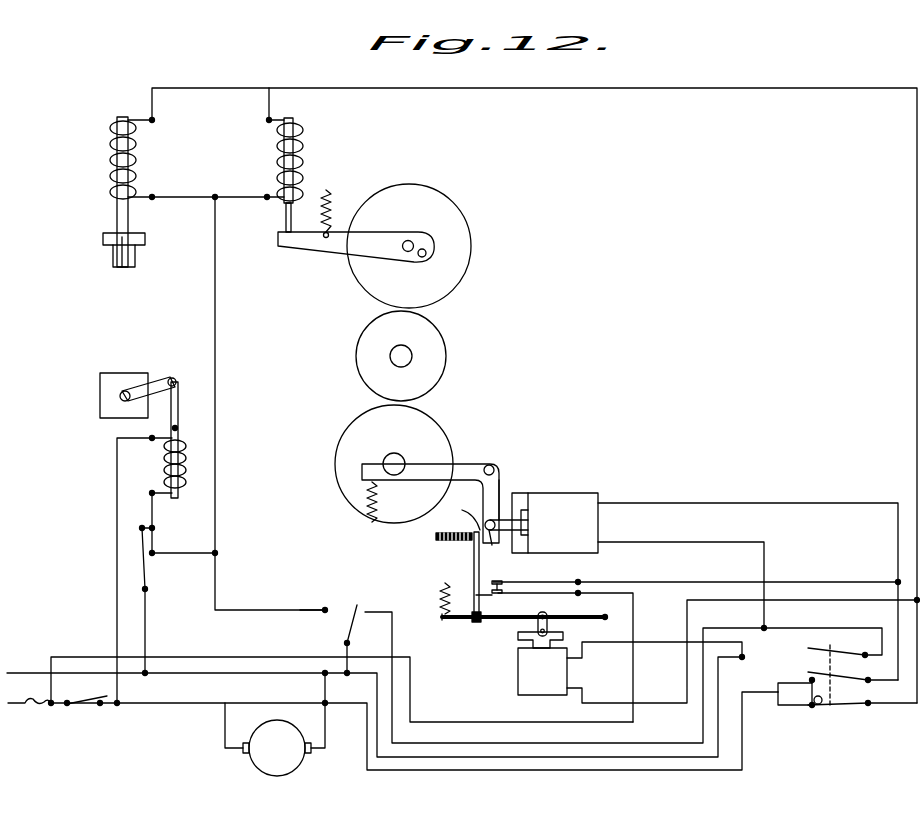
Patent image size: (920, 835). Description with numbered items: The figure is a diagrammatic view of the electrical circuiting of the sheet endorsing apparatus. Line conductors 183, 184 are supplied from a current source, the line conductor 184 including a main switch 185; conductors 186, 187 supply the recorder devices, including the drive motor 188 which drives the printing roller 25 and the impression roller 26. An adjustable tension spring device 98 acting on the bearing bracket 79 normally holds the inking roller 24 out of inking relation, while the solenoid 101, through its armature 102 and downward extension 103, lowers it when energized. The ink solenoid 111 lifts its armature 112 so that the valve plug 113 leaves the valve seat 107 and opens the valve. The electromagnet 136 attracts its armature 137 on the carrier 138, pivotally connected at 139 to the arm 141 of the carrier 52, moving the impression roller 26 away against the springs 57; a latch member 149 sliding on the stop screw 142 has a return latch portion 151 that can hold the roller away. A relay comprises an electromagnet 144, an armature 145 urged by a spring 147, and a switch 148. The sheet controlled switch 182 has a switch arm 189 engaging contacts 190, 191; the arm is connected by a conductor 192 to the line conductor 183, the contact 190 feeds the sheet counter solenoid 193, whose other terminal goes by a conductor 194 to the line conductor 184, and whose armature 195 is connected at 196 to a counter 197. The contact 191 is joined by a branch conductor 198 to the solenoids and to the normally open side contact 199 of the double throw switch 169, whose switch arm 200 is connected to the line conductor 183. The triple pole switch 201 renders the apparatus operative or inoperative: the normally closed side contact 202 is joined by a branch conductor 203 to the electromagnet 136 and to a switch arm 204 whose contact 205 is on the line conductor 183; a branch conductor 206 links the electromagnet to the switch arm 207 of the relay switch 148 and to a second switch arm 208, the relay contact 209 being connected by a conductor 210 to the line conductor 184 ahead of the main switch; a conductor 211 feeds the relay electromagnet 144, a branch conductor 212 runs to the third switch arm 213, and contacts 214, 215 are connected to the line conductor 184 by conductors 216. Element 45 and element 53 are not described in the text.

The inking roller 24 is at (471, 246).
The printing roller 25 is at (446, 340).
The impression roller 26 is at (446, 422).
The armature 45 is at (562, 637).
The carrier 52 is at (488, 470).
The pivot 53 is at (493, 467).
The springs 57 is at (370, 520).
The bearing bracket 79 is at (312, 248).
The adjustable tension spring device 98 is at (333, 210).
The solenoid 101 is at (300, 142).
The armature 102 is at (300, 170).
The downward extension 103 is at (284, 212).
The valve seat 107 is at (172, 230).
The solenoid 111 is at (130, 148).
The armature 112 is at (130, 180).
The valve plug 113 is at (118, 236).
The electromagnet 136 is at (573, 493).
The armature 137 is at (514, 504).
The carrier 138 is at (500, 527).
The pivotal connection 139 is at (491, 538).
The arm 141 is at (501, 494).
The stop screw 142 is at (446, 533).
The electromagnet 144 is at (522, 662).
The armature 145 is at (523, 619).
The spring 147 is at (440, 607).
The switch 148 is at (569, 585).
The latch member 149 is at (473, 564).
The return latch portion 151 is at (460, 511).
The sheet controlled double throw switch 169 is at (370, 638).
The sheet controlled switch 182 is at (134, 552).
The line conductor 183 is at (32, 672).
The line conductor 184 is at (21, 706).
The main switch 185 is at (88, 709).
The conductor 186 is at (342, 722).
The conductor 187 is at (225, 723).
The drive motor 188 is at (290, 765).
The switch arm 189 is at (140, 530).
The contact 190 is at (153, 530).
The contact 191 is at (153, 556).
The conductor 192 is at (146, 632).
The sheet counter solenoid 193 is at (186, 458).
The conductor 194 is at (117, 474).
The armature 195 is at (180, 432).
The connection 196 is at (190, 365).
The counter 197 is at (100, 394).
The branch conductor 198 is at (216, 318).
The normally open side contact 199 is at (325, 609).
The switch arm 200 is at (354, 606).
The triple pole switch 201 is at (790, 679).
The normally closed side contact 202 is at (446, 583).
The branch conductor 203 is at (829, 629).
The switch arm 204 is at (841, 643).
The contact 205 is at (806, 663).
The branch conductor 206 is at (898, 547).
The switch arm 207 is at (498, 584).
The second switch arm 208 is at (846, 676).
The contact 209 is at (497, 594).
The conductor 210 is at (287, 657).
The conductor 211 is at (641, 630).
The branch conductor 212 is at (917, 284).
The third switch arm 213 is at (846, 706).
The contact 214 is at (798, 694).
The contact 215 is at (816, 707).
The conductors 216 is at (778, 692).